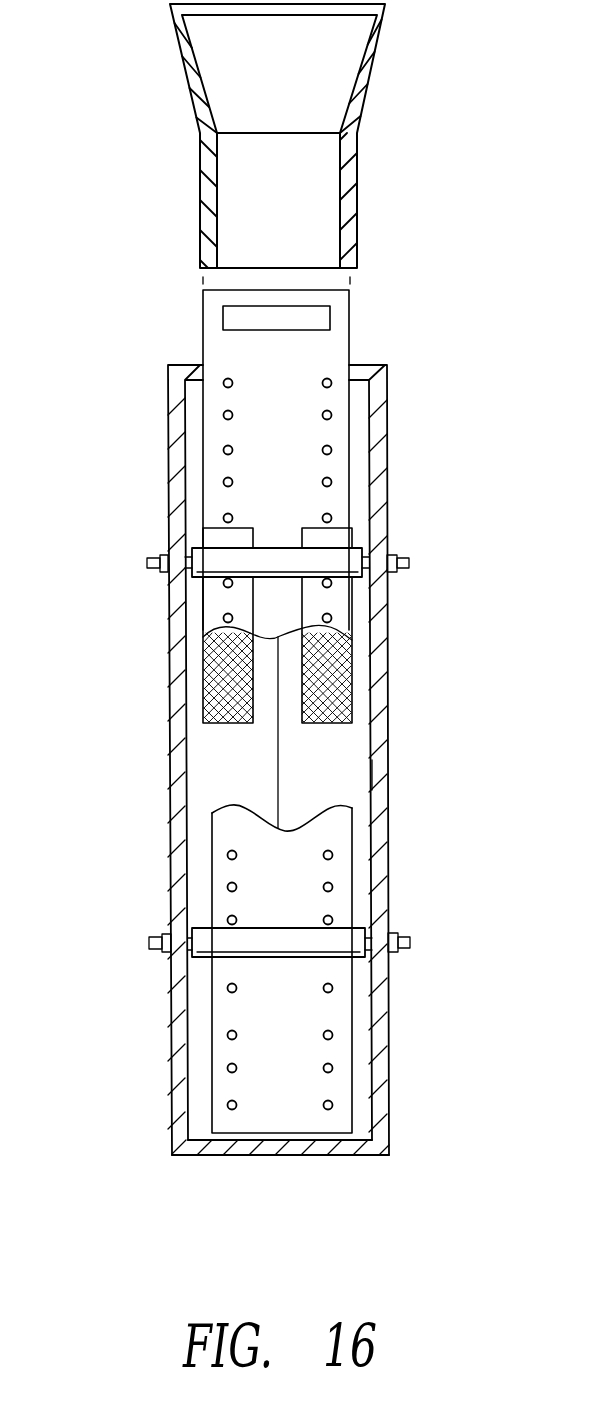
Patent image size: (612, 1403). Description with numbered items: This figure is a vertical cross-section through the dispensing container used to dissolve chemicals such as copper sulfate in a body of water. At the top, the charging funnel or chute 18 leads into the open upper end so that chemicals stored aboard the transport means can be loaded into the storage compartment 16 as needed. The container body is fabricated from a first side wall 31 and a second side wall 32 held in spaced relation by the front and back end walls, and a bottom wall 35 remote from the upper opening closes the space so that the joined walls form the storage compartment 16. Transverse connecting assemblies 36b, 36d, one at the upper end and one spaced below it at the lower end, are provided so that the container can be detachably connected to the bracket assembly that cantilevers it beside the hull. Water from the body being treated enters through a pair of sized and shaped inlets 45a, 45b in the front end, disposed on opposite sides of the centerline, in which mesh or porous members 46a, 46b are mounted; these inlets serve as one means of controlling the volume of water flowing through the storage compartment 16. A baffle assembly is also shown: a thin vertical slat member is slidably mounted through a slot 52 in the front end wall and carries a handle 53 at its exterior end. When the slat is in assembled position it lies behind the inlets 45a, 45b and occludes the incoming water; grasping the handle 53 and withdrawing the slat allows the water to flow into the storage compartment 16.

The charging funnel 18 is at (372, 63).
The handle 53 is at (338, 301).
The first side wall 31 is at (387, 412).
The second side wall 32 is at (168, 450).
The bottom wall 35 is at (218, 1150).
The storage compartment 16 is at (368, 767).
The transverse connecting assembly 36b is at (357, 558).
The transverse connecting assembly 36d is at (357, 942).
The inlet 45a is at (348, 661).
The inlet 45b is at (210, 662).
The mesh or porous member 46a is at (340, 697).
The mesh or porous member 46b is at (213, 702).
The slot 52 is at (338, 825).